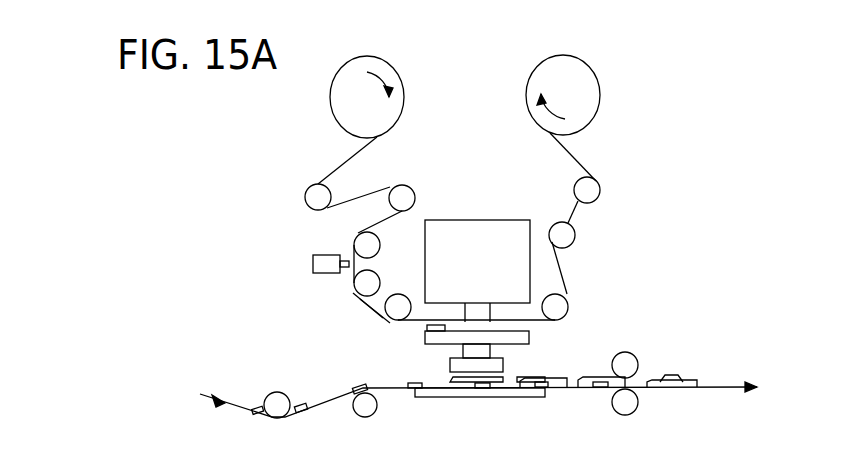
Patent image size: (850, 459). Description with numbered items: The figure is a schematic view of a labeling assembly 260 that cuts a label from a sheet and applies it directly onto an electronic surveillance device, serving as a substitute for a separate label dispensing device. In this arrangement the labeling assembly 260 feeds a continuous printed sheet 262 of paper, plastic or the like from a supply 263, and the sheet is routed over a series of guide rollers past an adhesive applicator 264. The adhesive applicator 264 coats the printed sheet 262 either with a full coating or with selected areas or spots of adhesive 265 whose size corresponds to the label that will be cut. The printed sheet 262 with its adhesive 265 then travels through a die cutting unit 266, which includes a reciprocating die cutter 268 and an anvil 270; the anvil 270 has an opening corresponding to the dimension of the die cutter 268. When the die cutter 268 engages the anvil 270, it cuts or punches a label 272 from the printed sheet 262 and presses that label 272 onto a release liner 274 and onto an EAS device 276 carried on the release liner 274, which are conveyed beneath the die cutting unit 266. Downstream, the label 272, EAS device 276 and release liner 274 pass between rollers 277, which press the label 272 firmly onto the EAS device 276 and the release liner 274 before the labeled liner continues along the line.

The labeling assembly 260 is at (672, 166).
The printed sheet 262 is at (376, 150).
The supply 263 is at (400, 80).
The adhesive applicator 264 is at (316, 257).
The adhesive 265 is at (366, 320).
The die cutting unit 266 is at (481, 220).
The reciprocating die cutter 268 is at (503, 367).
The anvil 270 is at (530, 332).
The label 272 is at (455, 375).
The release liner 274 is at (345, 395).
The EAS device 276 is at (413, 383).
The rollers 277 is at (630, 360).